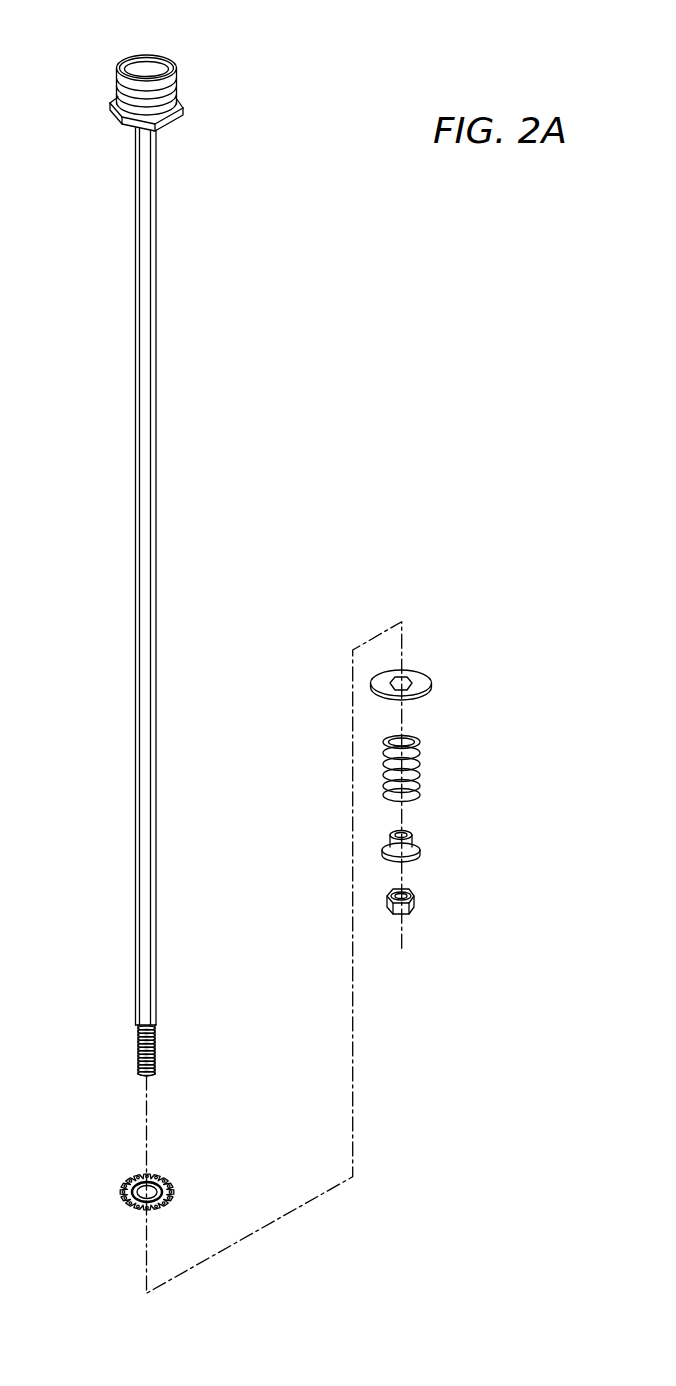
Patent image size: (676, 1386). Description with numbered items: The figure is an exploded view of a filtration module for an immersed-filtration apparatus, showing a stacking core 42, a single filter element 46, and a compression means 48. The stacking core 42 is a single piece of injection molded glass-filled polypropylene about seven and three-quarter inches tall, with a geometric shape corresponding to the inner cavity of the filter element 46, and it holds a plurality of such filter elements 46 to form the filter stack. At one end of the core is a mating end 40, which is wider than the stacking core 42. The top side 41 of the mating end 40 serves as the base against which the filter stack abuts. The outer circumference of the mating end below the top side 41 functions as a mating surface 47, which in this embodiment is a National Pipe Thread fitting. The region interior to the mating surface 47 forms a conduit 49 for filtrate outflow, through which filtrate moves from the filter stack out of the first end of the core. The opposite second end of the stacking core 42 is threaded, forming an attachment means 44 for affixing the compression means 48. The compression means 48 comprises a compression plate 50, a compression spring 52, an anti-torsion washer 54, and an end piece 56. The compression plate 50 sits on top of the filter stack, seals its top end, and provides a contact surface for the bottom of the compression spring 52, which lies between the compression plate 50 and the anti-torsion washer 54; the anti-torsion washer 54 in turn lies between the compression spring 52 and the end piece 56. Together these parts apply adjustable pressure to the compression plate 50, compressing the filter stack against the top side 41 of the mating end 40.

The mating end 40 is at (142, 93).
The top side 41 is at (173, 126).
The stacking core 42 is at (135, 599).
The attachment means 44 is at (138, 1054).
The filter element 46 is at (122, 1193).
The mating surface 47 is at (177, 90).
The compression means 48 is at (455, 787).
The conduit for filtrate outflow 49 is at (150, 77).
The compression plate 50 is at (432, 685).
The compression spring 52 is at (421, 773).
The anti-torsion washer 54 is at (421, 850).
The end piece 56 is at (427, 894).